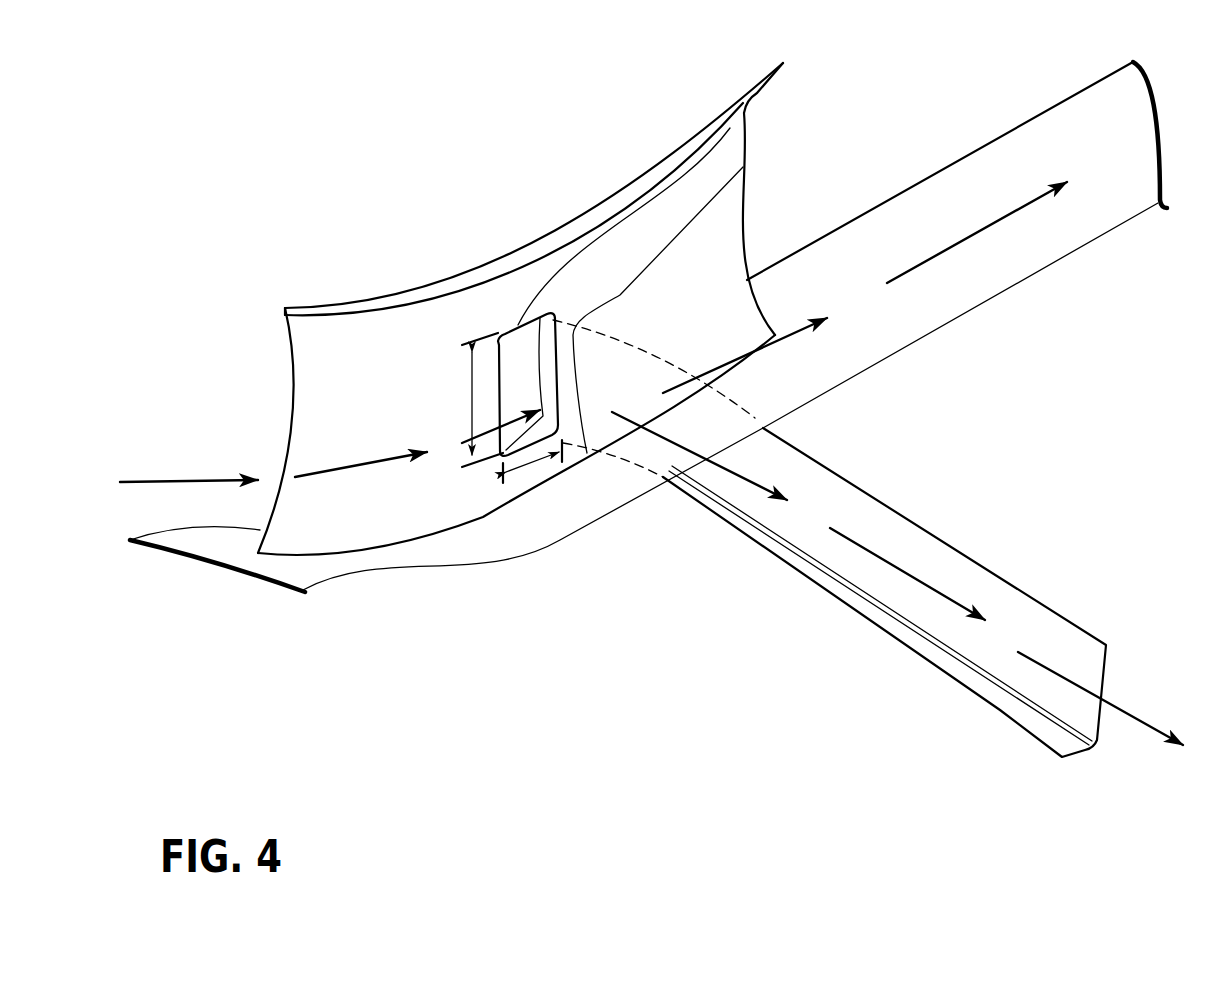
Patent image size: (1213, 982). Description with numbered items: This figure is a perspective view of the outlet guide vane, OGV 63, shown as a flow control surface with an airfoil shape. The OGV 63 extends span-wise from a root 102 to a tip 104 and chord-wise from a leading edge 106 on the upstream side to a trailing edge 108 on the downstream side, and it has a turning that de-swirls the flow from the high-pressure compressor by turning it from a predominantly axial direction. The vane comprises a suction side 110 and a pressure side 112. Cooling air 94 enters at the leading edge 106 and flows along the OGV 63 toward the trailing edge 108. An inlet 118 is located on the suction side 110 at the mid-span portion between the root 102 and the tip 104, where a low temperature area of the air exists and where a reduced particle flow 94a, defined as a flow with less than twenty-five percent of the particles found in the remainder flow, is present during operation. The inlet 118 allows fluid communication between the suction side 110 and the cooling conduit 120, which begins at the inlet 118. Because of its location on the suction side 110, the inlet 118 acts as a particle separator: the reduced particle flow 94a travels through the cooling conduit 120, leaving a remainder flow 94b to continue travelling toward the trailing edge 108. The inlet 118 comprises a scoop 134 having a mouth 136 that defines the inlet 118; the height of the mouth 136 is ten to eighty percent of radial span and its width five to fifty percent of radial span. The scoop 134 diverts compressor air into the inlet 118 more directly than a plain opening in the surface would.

The outlet guide vane 63 is at (651, 408).
The cooling air 94 is at (190, 482).
The reduced particle flow 94a is at (862, 547).
The remainder flow 94b is at (923, 262).
The root 102 is at (360, 547).
The tip 104 is at (402, 308).
The leading edge 106 is at (292, 412).
The trailing edge 108 is at (744, 188).
The suction side 110 is at (491, 309).
The pressure side 112 is at (494, 259).
The inlet 118 is at (503, 382).
The cooling conduit 120 is at (858, 620).
The scoop 134 is at (528, 318).
The mouth 136 is at (545, 390).